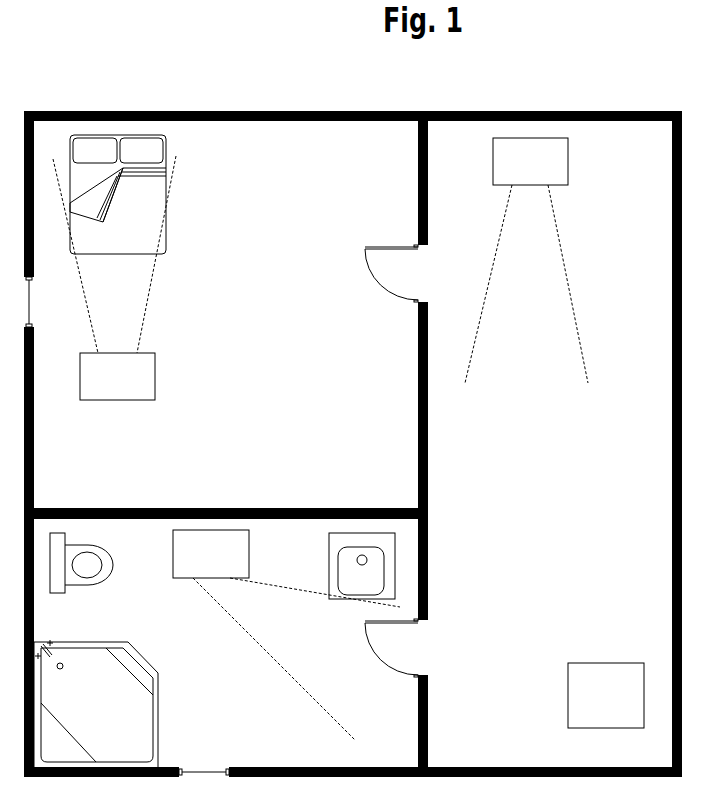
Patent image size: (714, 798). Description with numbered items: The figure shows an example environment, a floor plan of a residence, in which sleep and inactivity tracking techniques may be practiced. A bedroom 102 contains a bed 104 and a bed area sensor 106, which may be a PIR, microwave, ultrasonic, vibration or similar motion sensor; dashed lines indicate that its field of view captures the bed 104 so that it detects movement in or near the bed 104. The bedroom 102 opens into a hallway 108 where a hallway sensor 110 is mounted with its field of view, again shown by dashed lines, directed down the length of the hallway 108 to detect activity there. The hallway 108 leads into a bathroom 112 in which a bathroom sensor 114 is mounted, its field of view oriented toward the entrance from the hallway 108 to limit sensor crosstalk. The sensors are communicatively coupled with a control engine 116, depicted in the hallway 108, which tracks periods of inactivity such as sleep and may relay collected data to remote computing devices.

The bedroom 102 is at (325, 172).
The bed 104 is at (172, 176).
The bed area sensor 106 is at (98, 390).
The hallway 108 is at (609, 544).
The hallway sensor 110 is at (512, 175).
The bathroom 112 is at (248, 752).
The bathroom sensor 114 is at (192, 567).
The control engine 116 is at (587, 709).